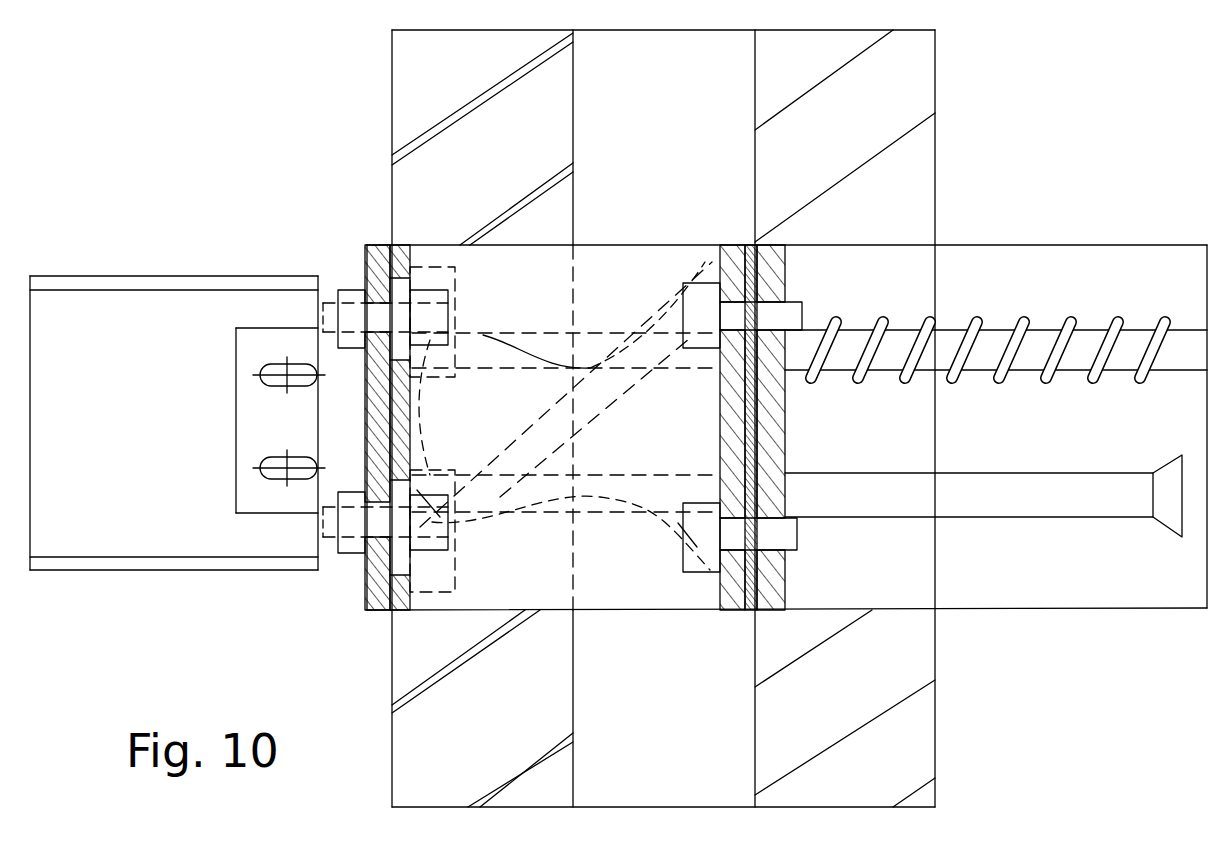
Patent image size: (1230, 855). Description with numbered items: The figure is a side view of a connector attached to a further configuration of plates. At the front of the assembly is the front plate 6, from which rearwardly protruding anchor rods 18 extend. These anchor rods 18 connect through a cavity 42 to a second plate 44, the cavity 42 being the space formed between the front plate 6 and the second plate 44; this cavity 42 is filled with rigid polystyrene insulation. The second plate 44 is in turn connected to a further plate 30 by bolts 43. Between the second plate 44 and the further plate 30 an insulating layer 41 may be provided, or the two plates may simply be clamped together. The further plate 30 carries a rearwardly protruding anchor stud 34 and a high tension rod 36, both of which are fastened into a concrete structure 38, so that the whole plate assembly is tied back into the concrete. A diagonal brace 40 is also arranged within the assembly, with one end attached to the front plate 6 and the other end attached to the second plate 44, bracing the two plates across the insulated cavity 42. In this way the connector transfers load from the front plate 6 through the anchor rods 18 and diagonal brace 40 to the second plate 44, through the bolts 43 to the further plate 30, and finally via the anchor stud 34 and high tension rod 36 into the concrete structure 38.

The front plate 6 is at (405, 612).
The anchor rods 18 is at (545, 345).
The further plate 30 is at (775, 275).
The anchor stud 34 is at (988, 497).
The high tension rod 36 is at (993, 335).
The concrete structure 38 is at (1045, 588).
The diagonal brace 40 is at (598, 397).
The insulating layer 41 is at (755, 245).
The cavity 42 is at (527, 268).
The bolts 43 is at (795, 317).
The second plate 44 is at (717, 262).